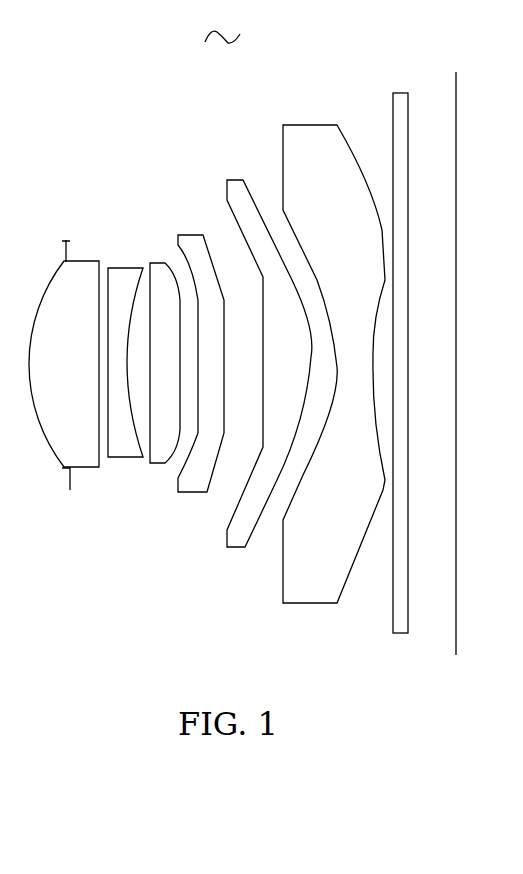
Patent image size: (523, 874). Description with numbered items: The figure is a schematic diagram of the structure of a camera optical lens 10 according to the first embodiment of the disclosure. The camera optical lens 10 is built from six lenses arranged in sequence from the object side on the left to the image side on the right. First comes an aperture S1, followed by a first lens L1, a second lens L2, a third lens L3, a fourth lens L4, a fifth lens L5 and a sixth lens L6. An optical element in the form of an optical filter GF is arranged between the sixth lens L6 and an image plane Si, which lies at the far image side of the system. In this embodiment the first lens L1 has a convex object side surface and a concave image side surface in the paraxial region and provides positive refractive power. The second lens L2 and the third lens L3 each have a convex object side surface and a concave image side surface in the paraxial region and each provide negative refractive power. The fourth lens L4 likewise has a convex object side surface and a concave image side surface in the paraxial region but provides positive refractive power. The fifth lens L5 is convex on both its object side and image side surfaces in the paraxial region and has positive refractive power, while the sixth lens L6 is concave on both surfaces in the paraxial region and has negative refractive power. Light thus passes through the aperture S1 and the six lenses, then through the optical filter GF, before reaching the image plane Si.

The camera optical lens 10 is at (222, 24).
The aperture S1 is at (70, 355).
The first lens L1 is at (64, 355).
The second lens L2 is at (125, 354).
The third lens L3 is at (161, 352).
The fourth lens L4 is at (201, 351).
The fifth lens L5 is at (268, 345).
The sixth lens L6 is at (334, 348).
The optical filter GF is at (401, 349).
The image plane Si is at (455, 348).